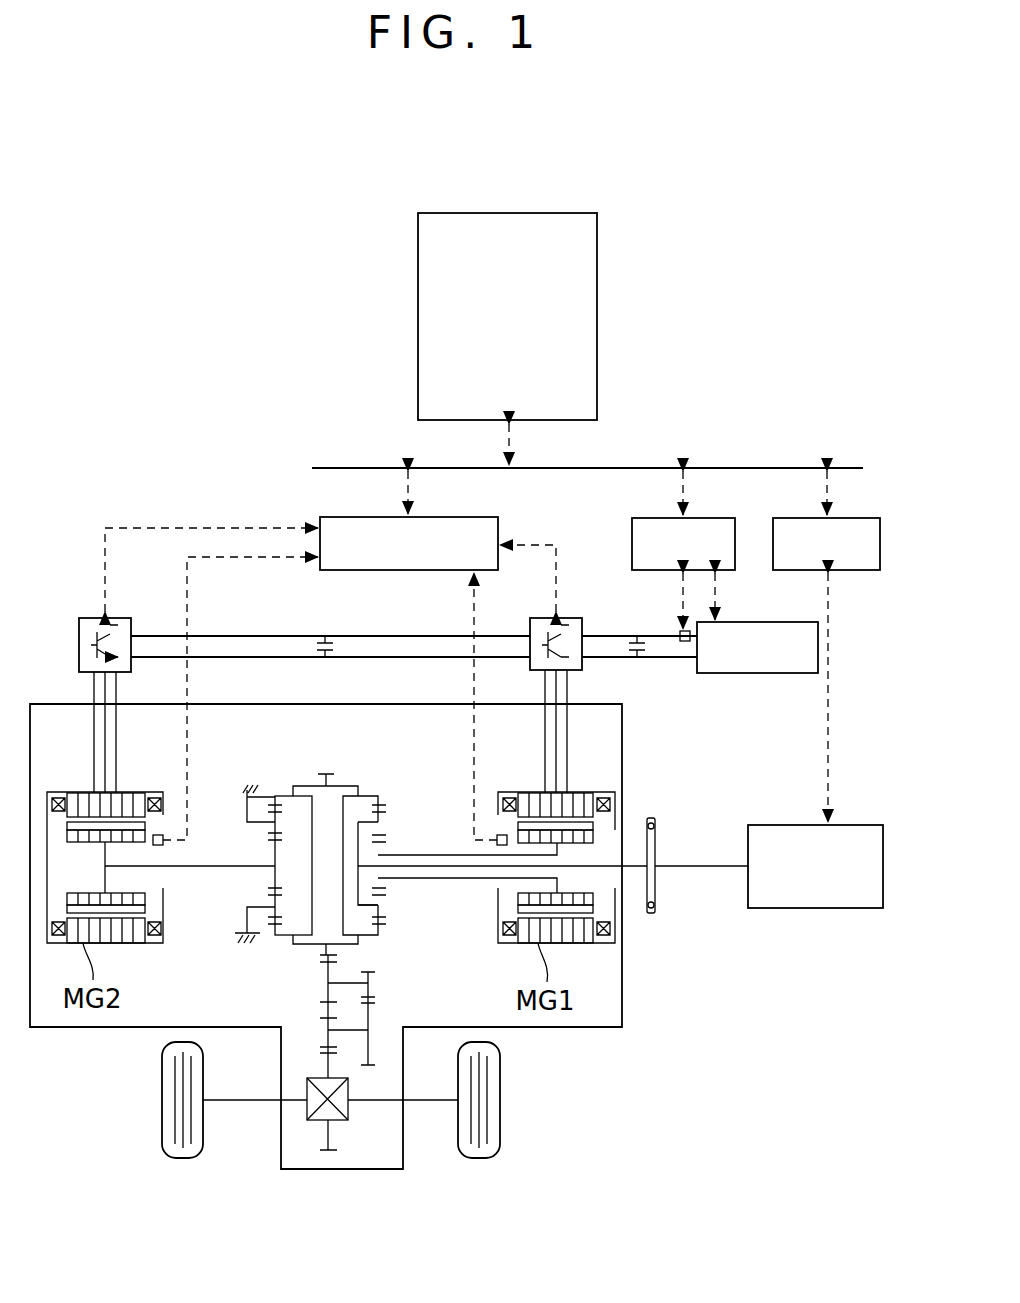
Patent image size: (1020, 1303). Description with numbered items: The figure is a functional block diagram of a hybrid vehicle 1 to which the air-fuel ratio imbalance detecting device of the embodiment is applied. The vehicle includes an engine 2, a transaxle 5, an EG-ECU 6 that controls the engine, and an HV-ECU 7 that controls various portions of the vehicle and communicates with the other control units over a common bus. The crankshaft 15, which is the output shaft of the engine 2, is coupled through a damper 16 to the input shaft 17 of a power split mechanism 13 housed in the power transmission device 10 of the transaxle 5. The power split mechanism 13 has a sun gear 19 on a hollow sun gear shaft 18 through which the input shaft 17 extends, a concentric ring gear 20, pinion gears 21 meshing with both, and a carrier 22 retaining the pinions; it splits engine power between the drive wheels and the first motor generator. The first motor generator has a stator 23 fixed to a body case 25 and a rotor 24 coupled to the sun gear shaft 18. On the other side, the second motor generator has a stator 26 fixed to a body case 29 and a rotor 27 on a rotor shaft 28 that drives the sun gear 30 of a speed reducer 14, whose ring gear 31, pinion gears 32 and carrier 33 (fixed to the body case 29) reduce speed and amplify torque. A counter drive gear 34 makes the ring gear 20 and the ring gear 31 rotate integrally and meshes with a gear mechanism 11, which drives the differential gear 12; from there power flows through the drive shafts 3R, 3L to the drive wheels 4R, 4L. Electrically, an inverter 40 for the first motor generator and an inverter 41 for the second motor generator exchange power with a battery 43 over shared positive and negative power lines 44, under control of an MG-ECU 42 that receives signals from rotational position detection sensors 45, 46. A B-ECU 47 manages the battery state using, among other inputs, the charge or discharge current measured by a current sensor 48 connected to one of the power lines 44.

The hybrid vehicle 1 is at (675, 157).
The engine 2 is at (780, 908).
The drive shaft 3L is at (228, 1105).
The drive shaft 3R is at (430, 1105).
The drive wheel 4L is at (162, 1106).
The drive wheel 4R is at (500, 1107).
The transaxle 5 is at (588, 1028).
The engine electronic control unit (EG-ECU) 6 is at (845, 571).
The hybrid electronic control unit (HV-ECU) 7 is at (597, 353).
The power transmission device 10 is at (287, 958).
The gear mechanism 11 is at (383, 999).
The differential gear 12 is at (350, 1110).
The power split mechanism 13 is at (390, 788).
The speed reducer 14 is at (297, 780).
The crankshaft 15 is at (722, 867).
The damper 16 is at (651, 913).
The input shaft 17 is at (567, 867).
The sun gear shaft 18 is at (558, 852).
The sun gear 19 is at (380, 888).
The ring gear 20 is at (380, 930).
The pinion gears 21 is at (380, 908).
The carrier 22 is at (350, 818).
The stator 23 is at (518, 795).
The rotor 24 is at (595, 838).
The body case 25 is at (596, 943).
The stator 26 is at (75, 795).
The rotor 27 is at (70, 843).
The rotor shaft 28 is at (200, 867).
The body case 29 is at (147, 943).
The sun gear 30 is at (275, 850).
The ring gear 31 is at (280, 796).
The pinion gears 32 is at (270, 800).
The carrier 33 is at (240, 800).
The counter drive gear 34 is at (317, 955).
The inverter 40 is at (540, 618).
The inverter 41 is at (124, 617).
The motor electronic control unit (MG-ECU) 42 is at (355, 571).
The battery 43 is at (733, 673).
The power lines 44 is at (405, 657).
The rotational position detection sensor 45 is at (158, 834).
The rotational position detection sensor 46 is at (497, 847).
The battery electronic control unit (B-ECU) 47 is at (725, 571).
The current sensor 48 is at (680, 632).